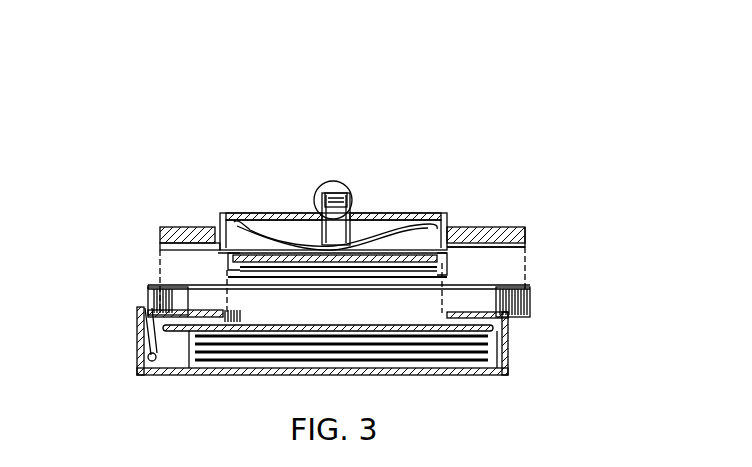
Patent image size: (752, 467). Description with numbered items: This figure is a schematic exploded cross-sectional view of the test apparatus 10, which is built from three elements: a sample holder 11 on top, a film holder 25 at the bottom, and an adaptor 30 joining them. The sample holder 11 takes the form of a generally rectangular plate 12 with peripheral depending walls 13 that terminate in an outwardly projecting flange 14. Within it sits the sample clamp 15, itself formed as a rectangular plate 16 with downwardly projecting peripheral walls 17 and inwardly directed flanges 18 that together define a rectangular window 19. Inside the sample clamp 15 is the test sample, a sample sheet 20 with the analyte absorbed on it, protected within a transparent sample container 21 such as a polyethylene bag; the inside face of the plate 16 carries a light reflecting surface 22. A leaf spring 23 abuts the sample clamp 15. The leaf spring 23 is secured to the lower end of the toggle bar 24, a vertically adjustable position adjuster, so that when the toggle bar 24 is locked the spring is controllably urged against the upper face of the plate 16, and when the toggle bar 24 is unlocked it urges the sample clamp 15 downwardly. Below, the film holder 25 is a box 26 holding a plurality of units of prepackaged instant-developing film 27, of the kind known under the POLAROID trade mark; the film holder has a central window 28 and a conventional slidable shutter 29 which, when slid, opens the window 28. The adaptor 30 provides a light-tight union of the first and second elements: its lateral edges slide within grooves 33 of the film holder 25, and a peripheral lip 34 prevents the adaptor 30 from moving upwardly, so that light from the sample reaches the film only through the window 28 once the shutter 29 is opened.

The test apparatus 10 is at (307, 110).
The sample holder 11 is at (222, 220).
The rectangular plate 12 is at (262, 213).
The peripheral depending walls 13 is at (452, 222).
The outwardly projecting flange 14 is at (160, 233).
The sample clamp 15 is at (527, 239).
The rectangular plate 16 is at (231, 262).
The downwardly projecting peripheral walls 17 is at (235, 277).
The inwardly directed flanges 18 is at (140, 292).
The rectangular window 19 is at (148, 290).
The sample sheet 20 is at (430, 265).
The transparent sample container 21 is at (533, 286).
The light reflecting surface 22 is at (430, 253).
The leaf spring 23 is at (386, 213).
The toggle bar 24 is at (338, 182).
The film holder 25 is at (133, 347).
The box 26 is at (158, 375).
The prepackaged instant-developing film 27 is at (488, 336).
The central window 28 is at (407, 317).
The slidable shutter 29 is at (187, 375).
The adaptor 30 is at (527, 230).
The grooves 33 is at (509, 318).
The peripheral lip 34 is at (533, 292).